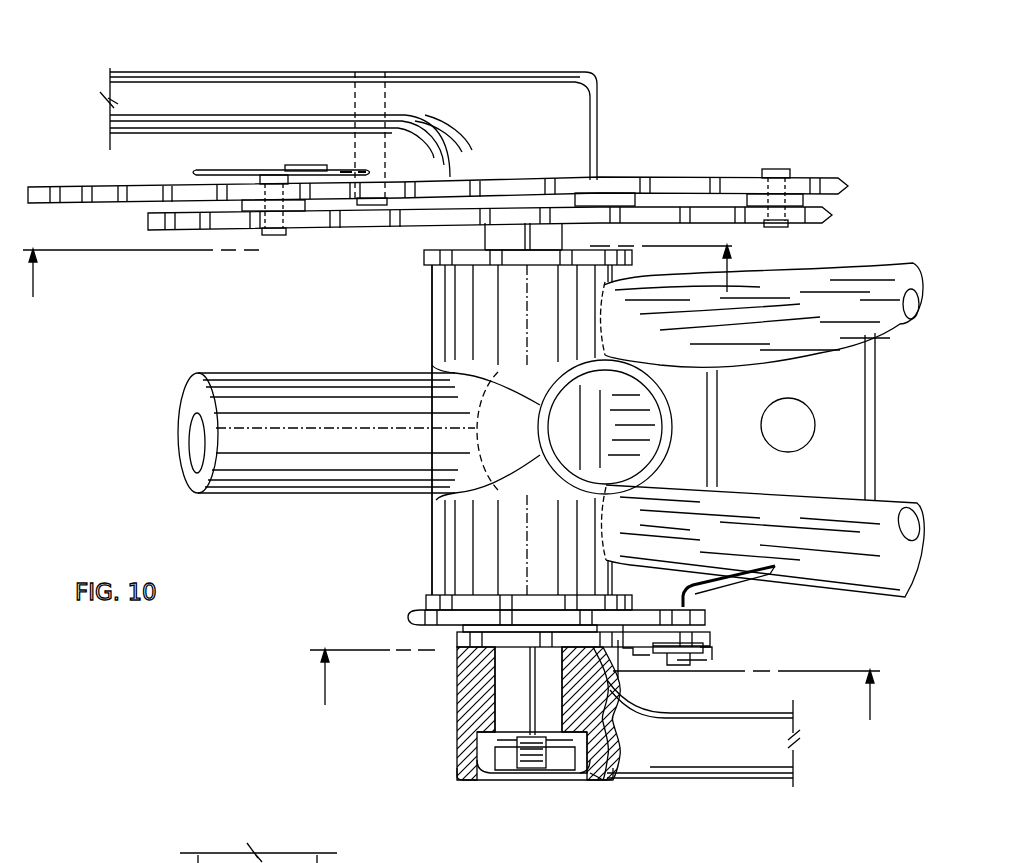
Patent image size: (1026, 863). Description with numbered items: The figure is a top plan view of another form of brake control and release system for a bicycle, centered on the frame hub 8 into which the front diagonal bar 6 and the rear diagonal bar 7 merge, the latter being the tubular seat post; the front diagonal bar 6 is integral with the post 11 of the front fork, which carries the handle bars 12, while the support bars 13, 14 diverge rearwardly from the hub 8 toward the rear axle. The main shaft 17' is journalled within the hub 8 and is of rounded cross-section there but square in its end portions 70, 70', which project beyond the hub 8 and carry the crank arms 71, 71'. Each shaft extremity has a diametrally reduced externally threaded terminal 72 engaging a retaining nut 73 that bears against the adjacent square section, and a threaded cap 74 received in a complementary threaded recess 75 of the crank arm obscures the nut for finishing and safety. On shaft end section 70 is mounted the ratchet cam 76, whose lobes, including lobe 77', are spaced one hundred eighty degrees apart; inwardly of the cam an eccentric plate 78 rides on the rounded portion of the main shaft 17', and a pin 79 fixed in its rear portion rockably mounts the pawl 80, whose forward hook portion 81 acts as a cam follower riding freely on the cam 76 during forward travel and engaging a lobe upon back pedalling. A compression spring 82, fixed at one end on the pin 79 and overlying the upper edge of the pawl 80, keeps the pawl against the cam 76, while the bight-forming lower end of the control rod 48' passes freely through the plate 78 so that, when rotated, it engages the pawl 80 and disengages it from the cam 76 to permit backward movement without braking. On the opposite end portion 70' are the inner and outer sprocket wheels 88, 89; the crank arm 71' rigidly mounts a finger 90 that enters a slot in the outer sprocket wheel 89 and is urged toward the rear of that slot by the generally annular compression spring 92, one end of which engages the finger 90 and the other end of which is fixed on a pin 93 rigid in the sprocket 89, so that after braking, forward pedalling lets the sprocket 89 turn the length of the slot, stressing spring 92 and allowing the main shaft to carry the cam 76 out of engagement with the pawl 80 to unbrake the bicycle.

The front diagonal bar 6 is at (245, 498).
The rear diagonal bar 7 is at (522, 483).
The hub 8 is at (600, 502).
The post 11 is at (599, 686).
The handle bars 12 is at (377, 276).
The support bar 13 is at (825, 490).
The support bar 14 is at (810, 365).
The main shaft 17' is at (453, 691).
The control rod 48' is at (790, 599).
The shaft end section 70 is at (486, 713).
The shaft end portion 70' is at (616, 151).
The crank arm 71 is at (670, 751).
The crank arm 71' is at (348, 100).
The externally threaded terminal 72 is at (535, 762).
The retaining nut 73 is at (555, 767).
The threaded cap 74 is at (577, 777).
The threaded recess 75 is at (470, 780).
The ratchet cam 76 is at (457, 639).
The cam lobe 77' is at (631, 815).
The plate 78 is at (408, 617).
The pin 79 is at (708, 645).
The pawl 80 is at (740, 670).
The hook portion 81 is at (652, 657).
The compression spring 82 is at (685, 667).
The inner sprocket wheel 88 is at (637, 182).
The outer sprocket wheel 89 is at (618, 208).
The finger 90 is at (360, 176).
The compression spring 92 is at (212, 170).
The pin 93 is at (290, 165).